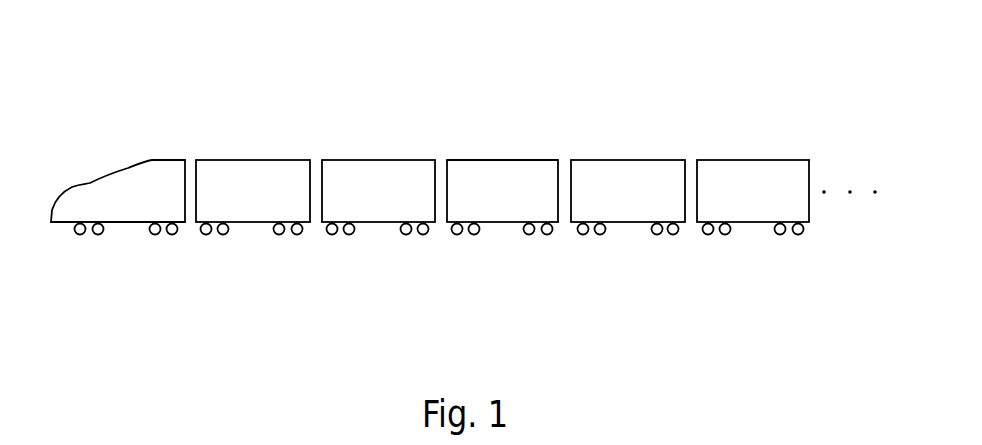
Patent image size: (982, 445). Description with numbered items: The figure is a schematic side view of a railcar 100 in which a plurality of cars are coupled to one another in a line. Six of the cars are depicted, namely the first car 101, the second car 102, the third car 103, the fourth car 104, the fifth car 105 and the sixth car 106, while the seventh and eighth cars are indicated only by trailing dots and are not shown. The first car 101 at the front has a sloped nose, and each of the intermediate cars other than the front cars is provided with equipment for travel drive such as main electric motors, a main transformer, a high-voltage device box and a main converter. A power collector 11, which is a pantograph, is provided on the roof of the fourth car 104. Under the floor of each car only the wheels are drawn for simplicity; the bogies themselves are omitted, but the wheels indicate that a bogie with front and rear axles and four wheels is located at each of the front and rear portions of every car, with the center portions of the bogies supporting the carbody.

The railcar 100 is at (188, 112).
The power collector 11 is at (512, 158).
The first car 101 is at (125, 228).
The second car 102 is at (252, 228).
The third car 103 is at (378, 228).
The fourth car 104 is at (502, 228).
The fifth car 105 is at (628, 228).
The sixth car 106 is at (750, 228).